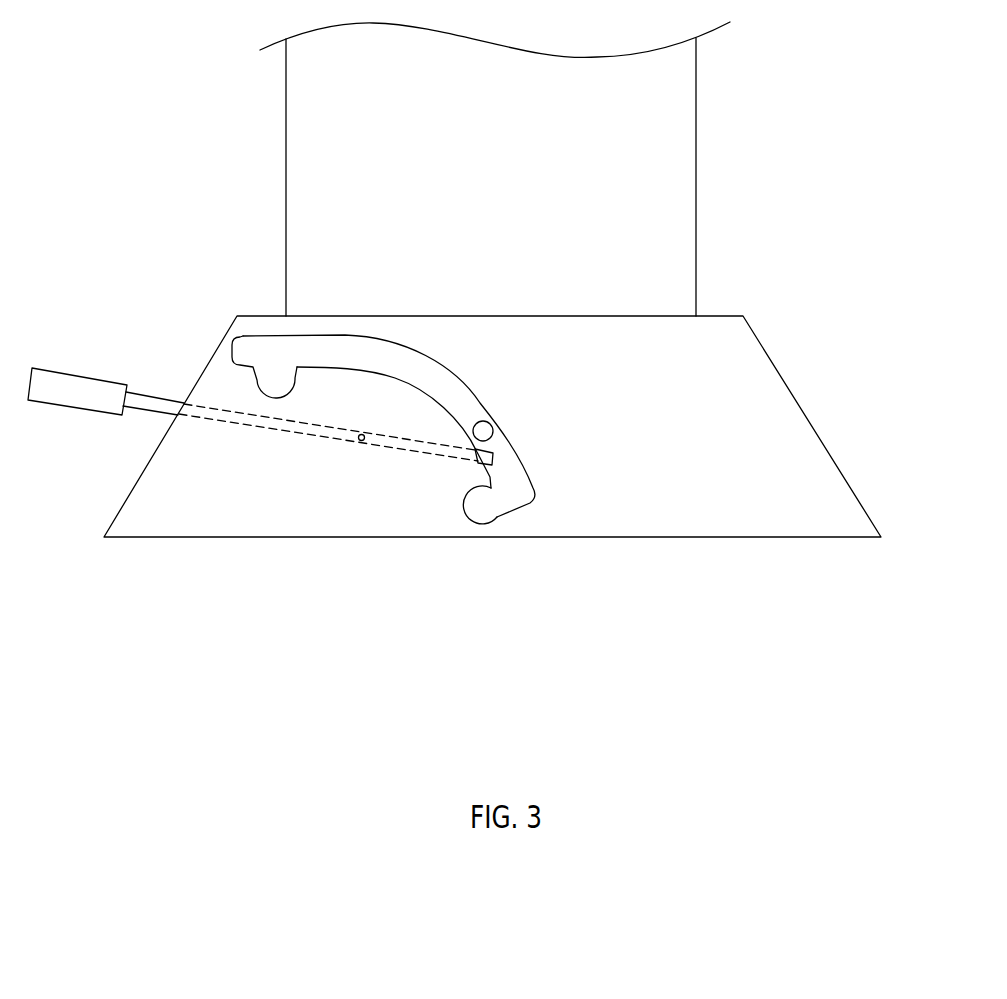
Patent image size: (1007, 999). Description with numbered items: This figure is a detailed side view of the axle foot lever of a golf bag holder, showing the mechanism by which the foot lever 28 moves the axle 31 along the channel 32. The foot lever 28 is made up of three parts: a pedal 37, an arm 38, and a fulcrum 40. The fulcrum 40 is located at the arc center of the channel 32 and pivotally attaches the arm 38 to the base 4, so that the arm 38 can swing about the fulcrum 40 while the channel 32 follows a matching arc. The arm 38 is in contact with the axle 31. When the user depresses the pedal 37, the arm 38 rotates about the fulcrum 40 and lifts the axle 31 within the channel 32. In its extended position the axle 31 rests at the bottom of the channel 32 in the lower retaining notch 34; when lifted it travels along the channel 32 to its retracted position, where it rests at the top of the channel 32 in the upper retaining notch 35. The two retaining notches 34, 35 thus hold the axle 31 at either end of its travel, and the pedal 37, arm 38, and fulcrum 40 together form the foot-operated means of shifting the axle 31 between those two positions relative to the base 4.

The base 4 is at (750, 395).
The foot lever 28 is at (158, 222).
The axle 31 is at (491, 424).
The channel 32 is at (523, 478).
The lower retaining notch 34 is at (485, 505).
The upper retaining notch 35 is at (275, 385).
The pedal 37 is at (92, 392).
The arm 38 is at (287, 428).
The fulcrum 40 is at (361, 440).